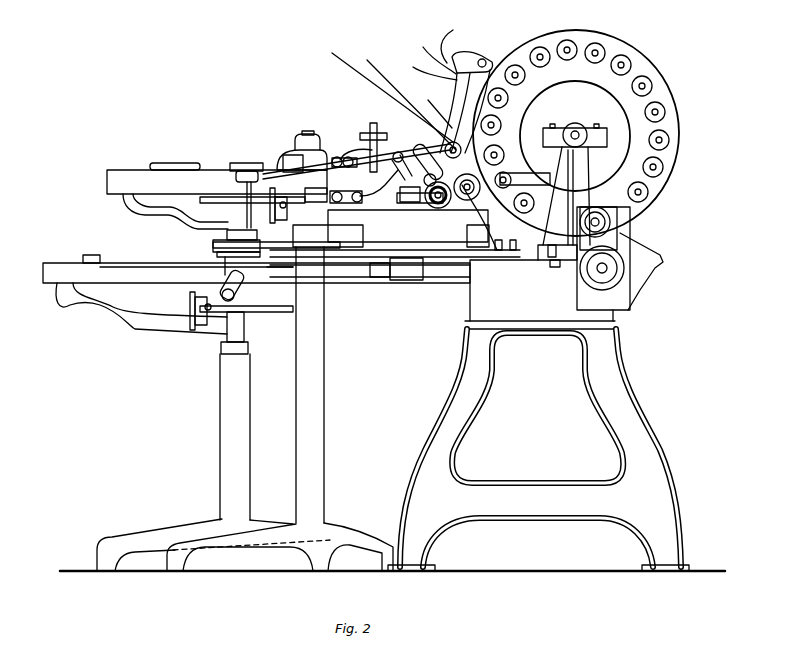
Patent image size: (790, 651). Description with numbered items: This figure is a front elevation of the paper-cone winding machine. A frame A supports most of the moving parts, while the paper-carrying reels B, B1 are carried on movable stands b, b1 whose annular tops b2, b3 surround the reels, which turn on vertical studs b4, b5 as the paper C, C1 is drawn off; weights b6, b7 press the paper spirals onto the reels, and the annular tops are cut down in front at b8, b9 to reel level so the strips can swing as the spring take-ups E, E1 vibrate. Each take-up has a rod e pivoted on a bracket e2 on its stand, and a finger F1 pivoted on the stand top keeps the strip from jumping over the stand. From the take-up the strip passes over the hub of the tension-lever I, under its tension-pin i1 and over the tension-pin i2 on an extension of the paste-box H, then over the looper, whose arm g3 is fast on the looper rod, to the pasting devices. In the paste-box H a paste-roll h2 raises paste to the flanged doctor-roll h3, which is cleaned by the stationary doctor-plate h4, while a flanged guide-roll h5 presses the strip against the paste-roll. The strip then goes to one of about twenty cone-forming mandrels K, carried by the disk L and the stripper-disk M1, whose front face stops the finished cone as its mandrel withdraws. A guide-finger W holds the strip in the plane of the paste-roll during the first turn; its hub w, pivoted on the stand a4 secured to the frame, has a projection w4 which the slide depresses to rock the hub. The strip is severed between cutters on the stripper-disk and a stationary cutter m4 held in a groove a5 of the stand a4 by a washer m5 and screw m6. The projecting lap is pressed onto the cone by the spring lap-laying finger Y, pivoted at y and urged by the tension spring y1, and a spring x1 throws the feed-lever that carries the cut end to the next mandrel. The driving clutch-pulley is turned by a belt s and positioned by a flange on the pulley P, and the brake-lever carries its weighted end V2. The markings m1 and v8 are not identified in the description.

The frame A is at (538, 398).
The stripper-disk M1 is at (681, 127).
The cone-forming mandrels K is at (557, 128).
The pulley P is at (605, 268).
The groove a5 is at (590, 170).
The spring lap-laying finger Y is at (505, 102).
The arm m1 is at (497, 150).
The pivot of lap-laying finger y is at (490, 58).
The tension spring y1 is at (456, 38).
The stand a4 is at (548, 295).
The stationary cutter m4 is at (428, 64).
The washer m5 is at (407, 96).
The screw m6 is at (382, 88).
The spring x1 is at (436, 180).
The arm g3 is at (398, 153).
The tension-pin i1 is at (373, 125).
The tension-lever I is at (350, 166).
The belt s is at (390, 183).
The disk L is at (314, 172).
The vertical stud b4 is at (320, 136).
The weight b6 is at (293, 140).
The spring take-up E is at (395, 222).
The stationary doctor-plate h4 is at (379, 225).
The flanged doctor-roll h3 is at (403, 225).
The flanged guide-roll h5 is at (433, 340).
The paste-roll h2 is at (450, 232).
The projection w4 is at (477, 265).
The guide-finger W is at (495, 252).
The hub w is at (500, 255).
The link v8 is at (397, 278).
The tension-pin i2 is at (362, 300).
The paste-box H is at (343, 232).
The paper-carrying reel B is at (200, 178).
The annular top b2 is at (126, 178).
The cut-down portion b8 is at (160, 163).
The paper C is at (240, 166).
The weight b7 is at (200, 230).
The paper-carrying reel B1 is at (155, 272).
The annular top b3 is at (70, 268).
The finger F1 is at (100, 255).
The vertical stud b5 is at (130, 260).
The paper C1 is at (186, 267).
The cut-down portion b9 is at (60, 308).
The bracket e2 is at (277, 222).
The rod e is at (255, 308).
The weighted end of brake-lever V2 is at (310, 272).
The spring take-up E1 is at (262, 336).
The stand b1 is at (164, 535).
The stand b is at (348, 537).